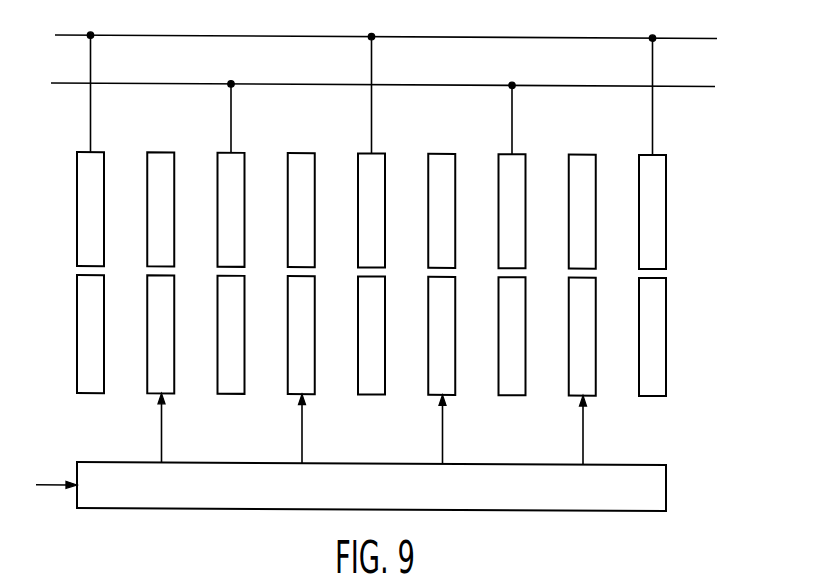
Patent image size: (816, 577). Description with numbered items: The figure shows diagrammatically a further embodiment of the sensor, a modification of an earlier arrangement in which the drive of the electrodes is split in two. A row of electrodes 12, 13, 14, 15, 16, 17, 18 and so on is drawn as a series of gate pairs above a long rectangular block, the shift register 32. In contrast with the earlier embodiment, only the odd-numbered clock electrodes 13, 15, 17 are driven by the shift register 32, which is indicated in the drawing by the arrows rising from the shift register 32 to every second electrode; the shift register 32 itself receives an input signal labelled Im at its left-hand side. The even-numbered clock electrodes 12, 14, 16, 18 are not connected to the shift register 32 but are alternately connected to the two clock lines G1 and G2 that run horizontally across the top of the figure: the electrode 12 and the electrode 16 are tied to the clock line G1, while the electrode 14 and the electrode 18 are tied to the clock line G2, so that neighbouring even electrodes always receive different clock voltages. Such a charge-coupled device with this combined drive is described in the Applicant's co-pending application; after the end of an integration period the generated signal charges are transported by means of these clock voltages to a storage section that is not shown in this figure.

The clock electrode 12 is at (84, 384).
The clock electrode 13 is at (154, 384).
The clock electrode 14 is at (224, 384).
The clock electrode 15 is at (295, 384).
The clock electrode 16 is at (365, 384).
The clock electrode 17 is at (435, 384).
The clock electrode 18 is at (505, 384).
The shift register 32 is at (658, 494).
The clock line G1 is at (399, 91).
The clock line G2 is at (397, 115).
The modulation current input Im is at (43, 483).